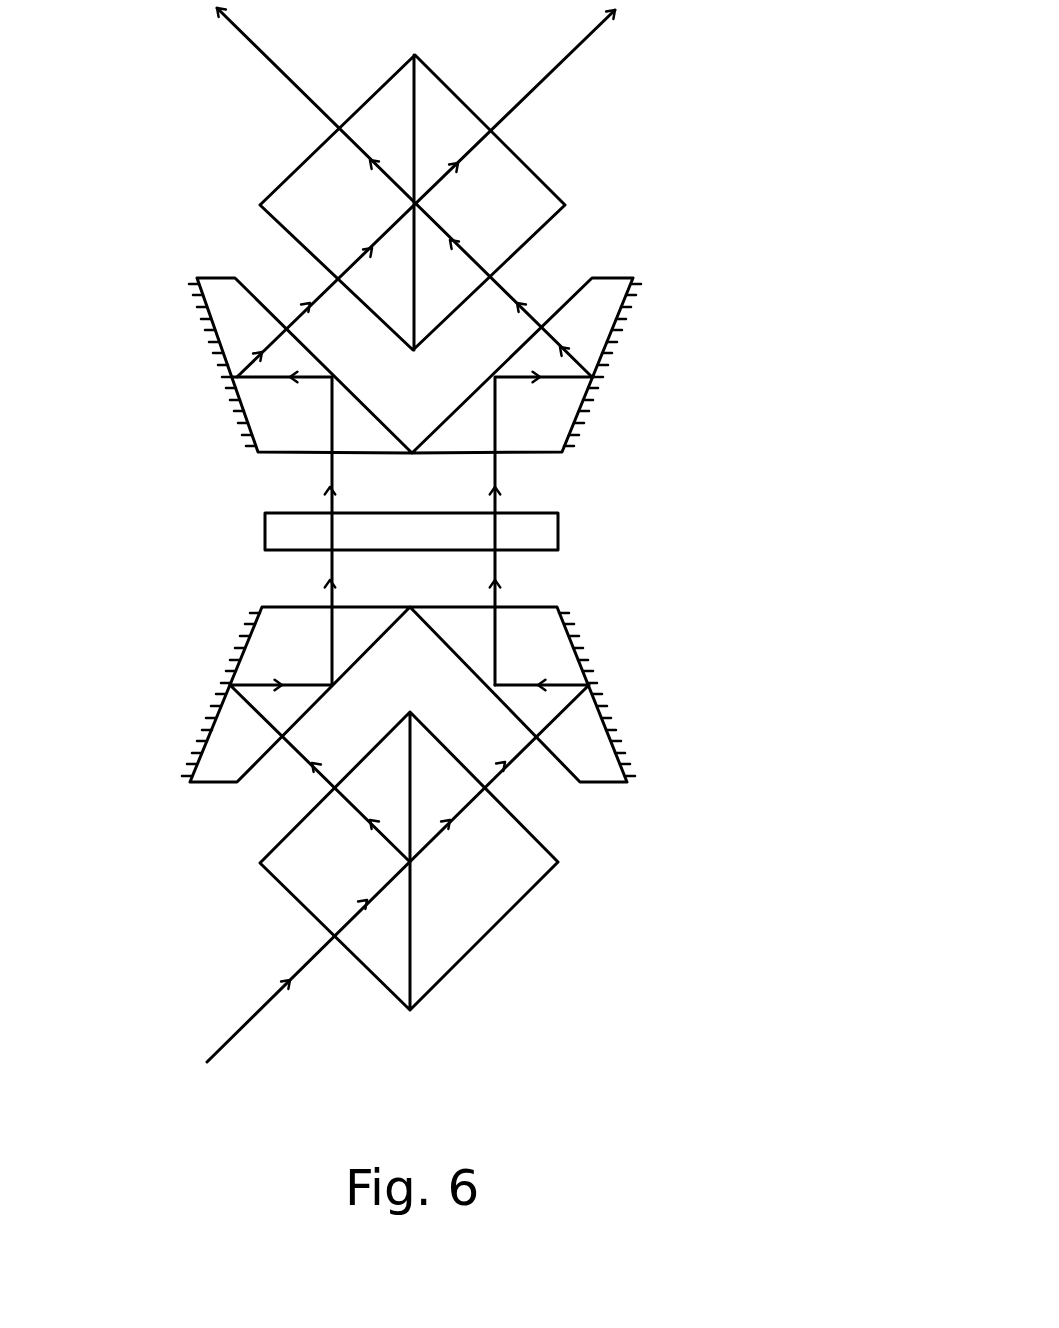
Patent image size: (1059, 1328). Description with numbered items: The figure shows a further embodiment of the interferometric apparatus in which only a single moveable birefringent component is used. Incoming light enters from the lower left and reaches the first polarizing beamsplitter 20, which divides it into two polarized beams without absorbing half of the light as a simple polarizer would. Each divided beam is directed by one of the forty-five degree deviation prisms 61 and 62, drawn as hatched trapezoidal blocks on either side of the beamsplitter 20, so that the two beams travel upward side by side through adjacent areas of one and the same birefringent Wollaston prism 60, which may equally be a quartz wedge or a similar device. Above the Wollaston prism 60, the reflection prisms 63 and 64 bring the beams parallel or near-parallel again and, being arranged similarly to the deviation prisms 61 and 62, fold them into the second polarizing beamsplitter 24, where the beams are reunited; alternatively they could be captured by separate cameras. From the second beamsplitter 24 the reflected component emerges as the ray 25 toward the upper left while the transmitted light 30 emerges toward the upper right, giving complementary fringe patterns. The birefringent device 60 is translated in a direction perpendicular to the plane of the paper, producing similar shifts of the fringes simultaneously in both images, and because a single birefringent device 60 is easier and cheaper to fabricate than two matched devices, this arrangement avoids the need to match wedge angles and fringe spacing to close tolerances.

The first polarizing beamsplitter 20 is at (495, 932).
The second polarizing beamsplitter 24 is at (533, 163).
The reflected ray 25 is at (287, 70).
The emerging light 30 is at (557, 68).
The Wollaston prism 60 is at (560, 535).
The 45° deviation prism 61 is at (617, 733).
The 45° deviation prism 62 is at (200, 740).
The reflection prism 63 is at (618, 330).
The reflection prism 64 is at (213, 338).